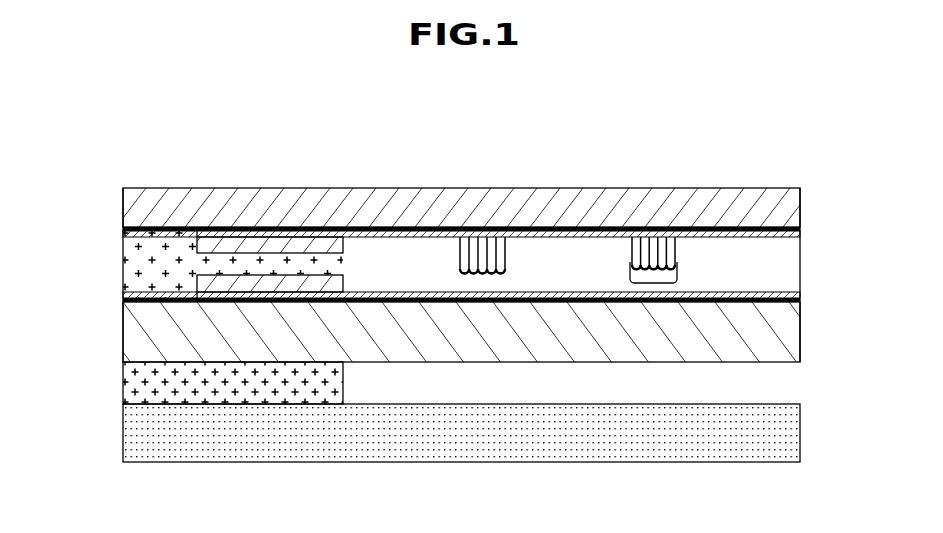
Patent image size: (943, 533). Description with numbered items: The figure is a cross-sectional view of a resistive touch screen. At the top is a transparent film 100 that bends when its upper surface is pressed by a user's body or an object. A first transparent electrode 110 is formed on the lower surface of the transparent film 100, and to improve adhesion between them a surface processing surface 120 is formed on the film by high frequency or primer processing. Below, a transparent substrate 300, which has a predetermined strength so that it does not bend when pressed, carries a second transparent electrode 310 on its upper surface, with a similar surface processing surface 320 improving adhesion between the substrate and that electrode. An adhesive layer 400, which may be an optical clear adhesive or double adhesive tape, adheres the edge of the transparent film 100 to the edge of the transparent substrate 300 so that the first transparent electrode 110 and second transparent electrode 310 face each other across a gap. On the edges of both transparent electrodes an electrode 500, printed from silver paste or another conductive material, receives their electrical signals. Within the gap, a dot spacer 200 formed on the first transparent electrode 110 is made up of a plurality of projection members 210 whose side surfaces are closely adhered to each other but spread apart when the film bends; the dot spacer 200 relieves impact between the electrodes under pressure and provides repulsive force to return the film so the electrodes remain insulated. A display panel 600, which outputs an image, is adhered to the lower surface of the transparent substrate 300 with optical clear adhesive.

The transparent film 100 is at (647, 202).
The first transparent electrode 110 is at (745, 235).
The surface processing surface 120 is at (702, 227).
The dot spacer 200 is at (653, 283).
The projection members 210 is at (672, 263).
The transparent substrate 300 is at (785, 353).
The second transparent electrode 310 is at (797, 295).
The surface processing surface 320 is at (767, 302).
The adhesive layer 400 is at (133, 233).
The electrode 500 is at (203, 292).
The display panel 600 is at (780, 435).